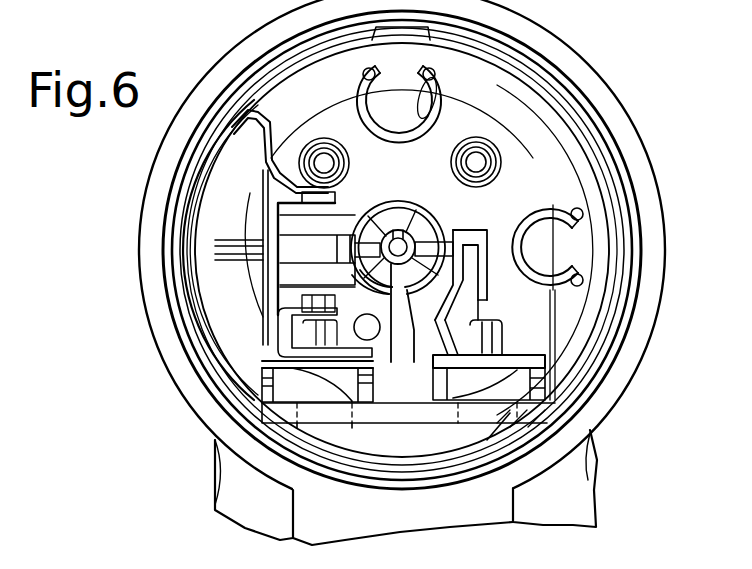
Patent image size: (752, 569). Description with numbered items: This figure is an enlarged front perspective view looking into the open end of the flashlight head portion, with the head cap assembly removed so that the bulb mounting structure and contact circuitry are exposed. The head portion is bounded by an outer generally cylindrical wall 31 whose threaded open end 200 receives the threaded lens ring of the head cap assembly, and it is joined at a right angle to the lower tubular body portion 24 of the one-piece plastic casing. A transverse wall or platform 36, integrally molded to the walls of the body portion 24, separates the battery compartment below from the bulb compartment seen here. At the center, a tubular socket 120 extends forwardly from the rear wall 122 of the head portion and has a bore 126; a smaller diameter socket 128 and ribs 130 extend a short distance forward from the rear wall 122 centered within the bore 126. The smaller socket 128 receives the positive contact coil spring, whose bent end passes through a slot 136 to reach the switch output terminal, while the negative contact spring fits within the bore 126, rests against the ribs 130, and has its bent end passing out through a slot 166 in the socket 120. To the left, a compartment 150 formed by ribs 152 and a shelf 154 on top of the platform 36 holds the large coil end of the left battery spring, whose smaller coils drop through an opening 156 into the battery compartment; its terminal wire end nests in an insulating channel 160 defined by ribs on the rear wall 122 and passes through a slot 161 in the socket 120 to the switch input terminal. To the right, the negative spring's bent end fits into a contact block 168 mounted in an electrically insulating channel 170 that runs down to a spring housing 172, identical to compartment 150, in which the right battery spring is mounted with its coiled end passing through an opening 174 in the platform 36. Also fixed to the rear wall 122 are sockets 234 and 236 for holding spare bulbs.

The lower tubular body portion 24 is at (587, 510).
The outer cylindrical wall 31 is at (645, 140).
The transverse wall or platform 36 is at (523, 414).
The tubular socket 120 is at (380, 178).
The rear wall 122 is at (482, 133).
The bore 126 is at (453, 204).
The smaller diameter socket 128 is at (386, 230).
The ribs 130 is at (363, 240).
The slot 136 is at (402, 228).
The compartment 150 is at (287, 387).
The ribs 152 is at (365, 394).
The shelf 154 is at (273, 360).
The opening 156 is at (302, 408).
The insulating channel 160 is at (400, 372).
The slot 161 is at (392, 284).
The slot 166 is at (462, 232).
The contact block 168 is at (473, 252).
The electrically insulating channel 170 is at (467, 308).
The spring housing 172 is at (525, 386).
The opening 174 is at (481, 445).
The threaded open end 200 is at (165, 258).
The socket 234 is at (422, 88).
The socket 236 is at (584, 238).